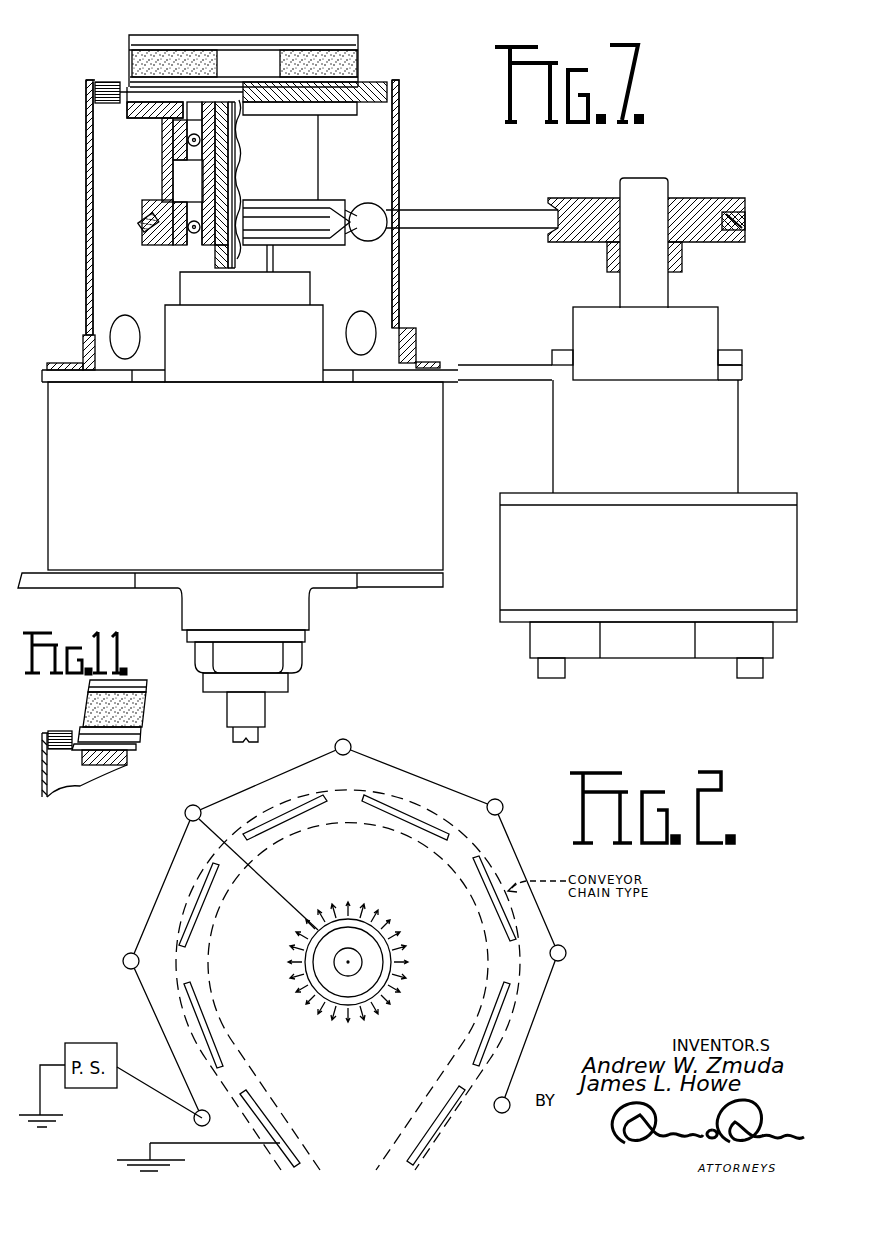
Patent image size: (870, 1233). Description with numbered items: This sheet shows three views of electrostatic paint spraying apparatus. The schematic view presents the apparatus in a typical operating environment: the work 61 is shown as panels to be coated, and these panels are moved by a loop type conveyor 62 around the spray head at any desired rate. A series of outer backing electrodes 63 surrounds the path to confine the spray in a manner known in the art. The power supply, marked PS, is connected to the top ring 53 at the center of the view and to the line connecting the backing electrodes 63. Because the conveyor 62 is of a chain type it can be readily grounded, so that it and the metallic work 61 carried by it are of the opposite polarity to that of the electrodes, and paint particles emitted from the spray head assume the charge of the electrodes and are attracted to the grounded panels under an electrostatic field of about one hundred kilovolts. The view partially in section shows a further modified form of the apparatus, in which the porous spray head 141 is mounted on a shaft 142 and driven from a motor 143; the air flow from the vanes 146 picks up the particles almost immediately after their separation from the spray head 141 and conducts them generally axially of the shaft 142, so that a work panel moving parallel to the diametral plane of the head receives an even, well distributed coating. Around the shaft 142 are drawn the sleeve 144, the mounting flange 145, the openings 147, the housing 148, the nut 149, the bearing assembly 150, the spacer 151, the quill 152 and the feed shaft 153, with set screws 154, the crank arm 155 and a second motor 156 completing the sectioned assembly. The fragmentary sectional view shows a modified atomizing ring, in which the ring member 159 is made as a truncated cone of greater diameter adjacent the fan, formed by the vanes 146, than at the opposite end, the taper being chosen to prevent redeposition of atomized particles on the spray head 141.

In FIG. 7, the spray head 141 is at (372, 44).
In FIG. 11, the spray head 141 is at (152, 739).
In FIG. 7, the shaft 142 is at (222, 260).
In FIG. 7, the motor 143 is at (443, 447).
In FIG. 7, the spindle sleeve 144 is at (233, 249).
In FIG. 7, the wheel mounting flange 145 is at (388, 73).
In FIG. 7, the vanes 146 is at (373, 102).
In FIG. 11, the vanes 146 is at (58, 731).
In FIG. 7, the housing openings 147 is at (115, 337).
In FIG. 7, the housing 148 is at (400, 292).
In FIG. 7, the adjusting nut 149 is at (143, 114).
In FIG. 7, the bearing assembly 150 is at (168, 153).
In FIG. 7, the bearing spacer 151 is at (183, 192).
In FIG. 7, the quill 152 is at (215, 175).
In FIG. 7, the feed shaft 153 is at (330, 200).
In FIG. 7, the set screw 154 is at (138, 218).
In FIG. 7, the crank arm 155 is at (716, 243).
In FIG. 7, the feed motor 156 is at (500, 514).
In FIG. 11, the ring member 159 is at (125, 714).
In FIG. 2, the top ring 53 is at (390, 936).
In FIG. 2, the work 61 is at (216, 908).
In FIG. 2, the loop type conveyor 62 is at (217, 1008).
In FIG. 2, the outer backing electrodes 63 is at (499, 800).